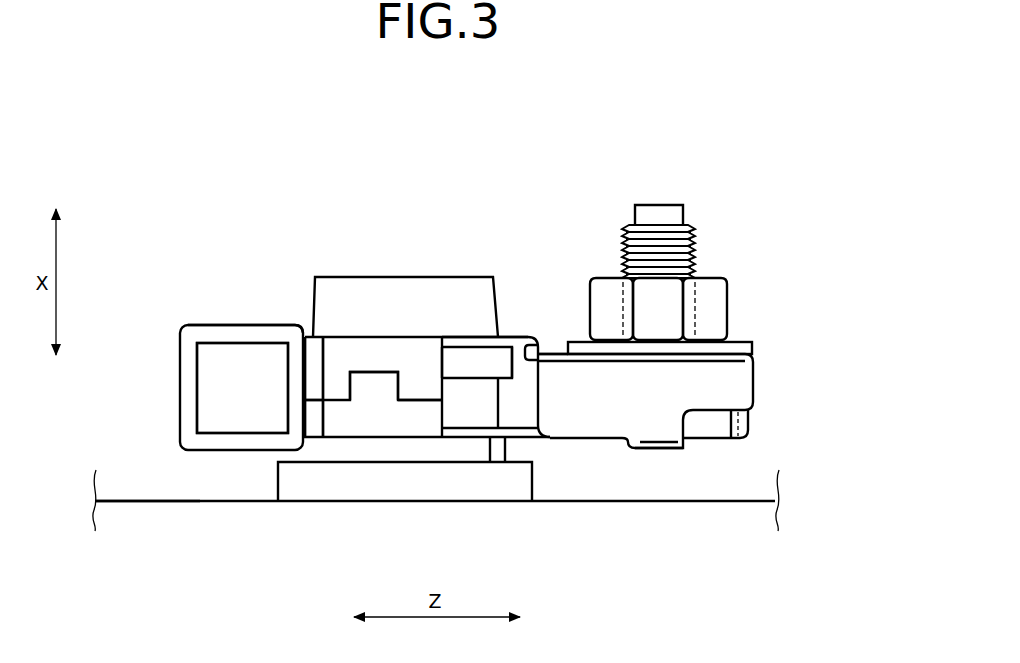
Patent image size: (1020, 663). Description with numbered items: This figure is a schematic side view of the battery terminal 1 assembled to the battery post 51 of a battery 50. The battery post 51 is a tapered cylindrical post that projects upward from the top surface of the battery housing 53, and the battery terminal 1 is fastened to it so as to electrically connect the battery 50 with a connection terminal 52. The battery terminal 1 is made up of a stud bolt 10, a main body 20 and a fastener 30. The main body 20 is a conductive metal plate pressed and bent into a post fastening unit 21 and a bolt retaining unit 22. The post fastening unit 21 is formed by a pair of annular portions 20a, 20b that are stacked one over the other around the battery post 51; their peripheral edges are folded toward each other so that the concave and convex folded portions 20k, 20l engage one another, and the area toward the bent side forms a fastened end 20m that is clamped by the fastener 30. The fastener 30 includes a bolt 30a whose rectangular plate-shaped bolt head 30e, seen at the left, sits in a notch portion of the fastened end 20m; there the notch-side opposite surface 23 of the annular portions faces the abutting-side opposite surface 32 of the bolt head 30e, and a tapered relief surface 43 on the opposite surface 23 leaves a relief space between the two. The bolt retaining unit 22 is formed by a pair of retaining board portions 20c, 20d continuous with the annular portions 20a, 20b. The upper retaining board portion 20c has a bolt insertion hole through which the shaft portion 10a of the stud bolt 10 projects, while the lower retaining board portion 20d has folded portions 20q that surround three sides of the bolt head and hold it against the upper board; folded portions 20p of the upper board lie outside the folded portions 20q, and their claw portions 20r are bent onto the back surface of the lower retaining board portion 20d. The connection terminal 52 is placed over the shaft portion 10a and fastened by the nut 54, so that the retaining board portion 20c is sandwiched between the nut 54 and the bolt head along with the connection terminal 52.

The battery terminal 1 is at (208, 116).
The stud bolt 10 is at (736, 201).
The shaft portion 10a is at (697, 252).
The main body 20 is at (538, 206).
The annular portion 20a is at (461, 338).
The annular portion 20b is at (480, 434).
The retaining board portion 20c is at (570, 342).
The retaining board portion 20d is at (713, 433).
The folded portion 20k is at (413, 367).
The folded portion 20l is at (372, 392).
The fastened end 20m is at (172, 344).
The folded portion 20p is at (600, 413).
The folded portion 20q is at (714, 420).
The claw portion 20r is at (667, 449).
The post fastening unit 21 is at (436, 308).
The bolt retaining unit 22 is at (548, 309).
The opposite surface 23 is at (300, 378).
The fastener 30 is at (200, 293).
The bolt 30a is at (226, 321).
The bolt head 30e is at (262, 366).
The opposite surface 32 is at (309, 353).
The relief surface 43 is at (313, 377).
The battery 50 is at (126, 493).
The battery post 51 is at (378, 310).
The connection terminal 52 is at (730, 352).
The battery housing 53 is at (148, 493).
The nut 54 is at (705, 302).